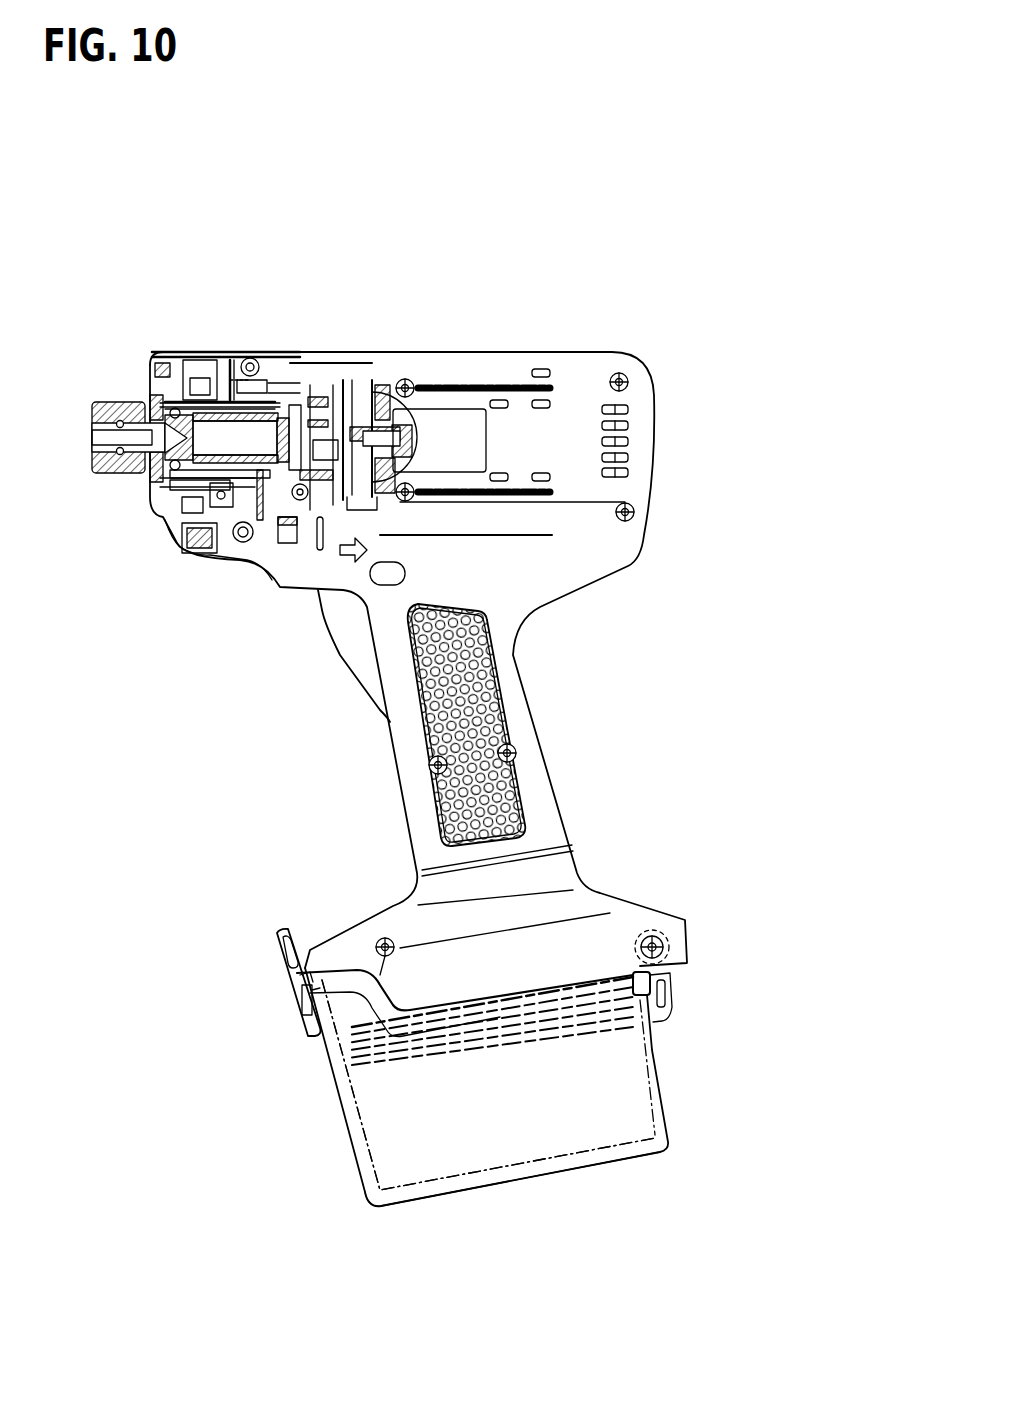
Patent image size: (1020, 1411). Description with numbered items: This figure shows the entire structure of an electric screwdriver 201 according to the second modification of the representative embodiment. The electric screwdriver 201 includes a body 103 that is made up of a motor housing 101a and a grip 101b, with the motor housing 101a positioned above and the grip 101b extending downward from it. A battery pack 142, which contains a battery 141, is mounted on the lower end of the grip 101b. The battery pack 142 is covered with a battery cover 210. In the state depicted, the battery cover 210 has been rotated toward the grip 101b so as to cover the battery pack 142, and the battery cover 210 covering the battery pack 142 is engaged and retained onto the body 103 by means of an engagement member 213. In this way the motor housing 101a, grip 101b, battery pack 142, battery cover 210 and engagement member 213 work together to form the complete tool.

The motor housing 101a is at (505, 315).
The grip 101b is at (562, 708).
The body 103 is at (737, 488).
The electric screwdriver 201 is at (657, 322).
The battery cover 210 is at (343, 1125).
The engagement member 213 is at (272, 960).
The battery 141 is at (365, 1197).
The battery pack 142 is at (365, 1197).